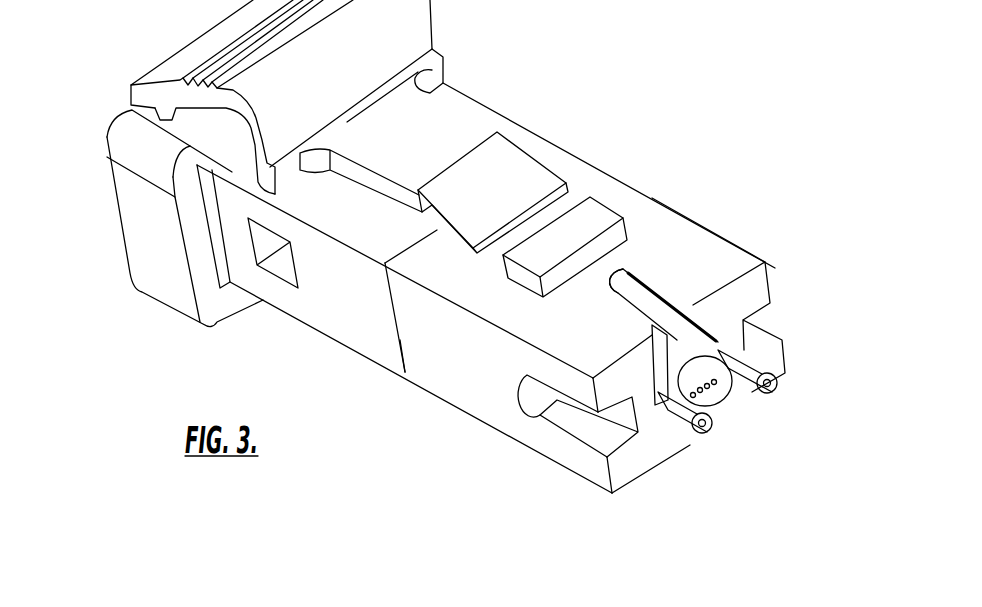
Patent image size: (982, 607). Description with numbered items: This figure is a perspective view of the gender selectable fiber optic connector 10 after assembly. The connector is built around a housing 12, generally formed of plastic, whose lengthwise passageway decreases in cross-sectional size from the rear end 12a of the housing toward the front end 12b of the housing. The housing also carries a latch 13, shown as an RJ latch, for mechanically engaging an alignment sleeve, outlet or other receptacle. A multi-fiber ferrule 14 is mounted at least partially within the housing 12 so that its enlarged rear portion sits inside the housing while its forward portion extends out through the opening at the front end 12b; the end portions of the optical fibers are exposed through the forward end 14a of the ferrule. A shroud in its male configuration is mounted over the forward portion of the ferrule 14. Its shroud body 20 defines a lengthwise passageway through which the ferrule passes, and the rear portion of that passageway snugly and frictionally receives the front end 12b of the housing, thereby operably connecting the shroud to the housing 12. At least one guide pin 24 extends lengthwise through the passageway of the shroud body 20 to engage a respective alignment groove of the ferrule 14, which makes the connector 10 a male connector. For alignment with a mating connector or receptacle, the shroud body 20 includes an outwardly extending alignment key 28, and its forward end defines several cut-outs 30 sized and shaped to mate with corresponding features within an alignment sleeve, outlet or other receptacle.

The gender selectable fiber optic connector 10 is at (582, 117).
The housing 12 is at (160, 257).
The rear end of the housing 12a is at (110, 193).
The front end of the housing 12b is at (390, 303).
The latch 13 is at (457, 133).
The ferrule 14 is at (677, 337).
The forward end of the ferrule 14a is at (720, 397).
The shroud body 20 is at (737, 263).
The guide pin 24 is at (692, 507).
The alignment key 28 is at (593, 217).
The cut-outs 30 is at (648, 297).